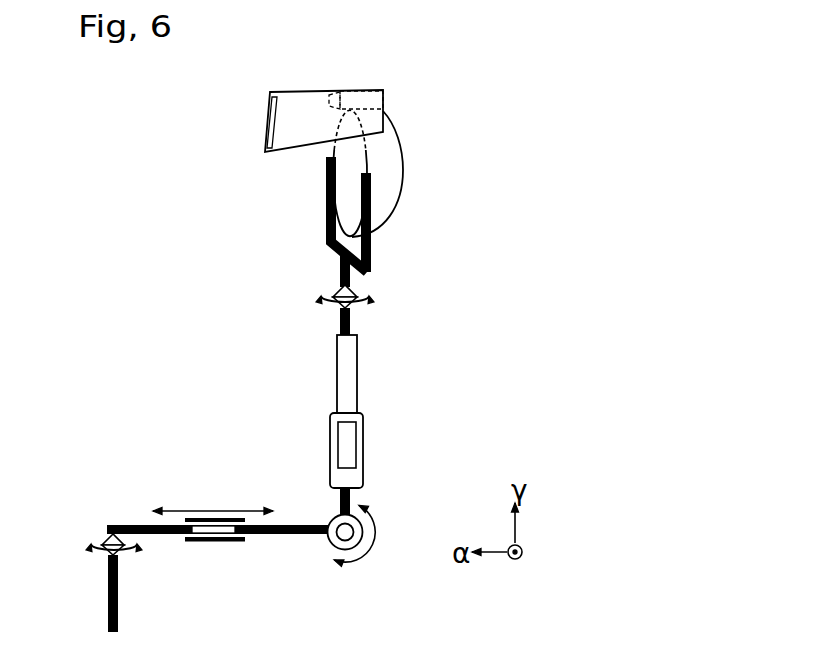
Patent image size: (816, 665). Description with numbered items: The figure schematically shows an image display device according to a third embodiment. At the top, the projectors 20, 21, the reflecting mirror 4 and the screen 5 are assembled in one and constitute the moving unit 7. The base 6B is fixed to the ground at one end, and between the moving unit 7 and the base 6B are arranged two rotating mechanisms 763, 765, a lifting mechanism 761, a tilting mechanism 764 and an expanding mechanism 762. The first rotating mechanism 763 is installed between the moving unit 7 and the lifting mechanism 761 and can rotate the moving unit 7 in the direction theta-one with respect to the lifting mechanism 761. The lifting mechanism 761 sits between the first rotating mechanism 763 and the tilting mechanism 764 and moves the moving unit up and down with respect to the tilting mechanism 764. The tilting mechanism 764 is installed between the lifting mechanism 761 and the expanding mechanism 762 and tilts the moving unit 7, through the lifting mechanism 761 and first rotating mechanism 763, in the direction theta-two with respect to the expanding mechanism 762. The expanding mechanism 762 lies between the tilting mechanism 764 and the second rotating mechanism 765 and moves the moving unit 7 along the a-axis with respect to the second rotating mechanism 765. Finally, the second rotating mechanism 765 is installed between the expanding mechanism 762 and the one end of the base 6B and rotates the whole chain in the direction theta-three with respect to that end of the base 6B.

The reflecting mirror 4 is at (269, 112).
The screen 5 is at (403, 160).
The moving unit 7 is at (478, 30).
The projector 20 is at (363, 97).
The projector 21 is at (363, 97).
The lifting mechanism 761 is at (337, 383).
The expanding mechanism 762 is at (190, 520).
The first rotating mechanism 763 is at (350, 287).
The tilting mechanism 764 is at (332, 545).
The second rotating mechanism 765 is at (107, 537).
The base 6B is at (107, 610).